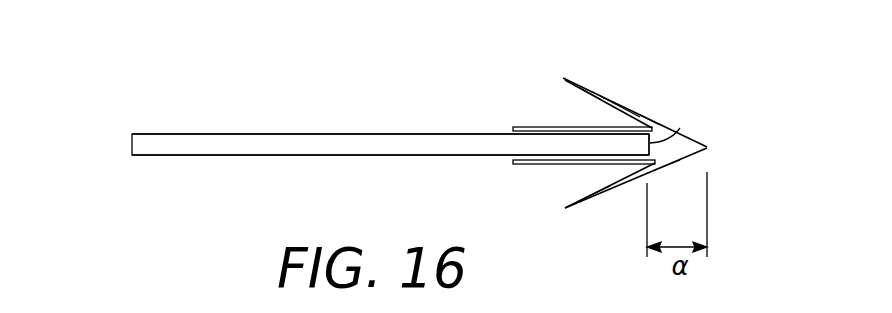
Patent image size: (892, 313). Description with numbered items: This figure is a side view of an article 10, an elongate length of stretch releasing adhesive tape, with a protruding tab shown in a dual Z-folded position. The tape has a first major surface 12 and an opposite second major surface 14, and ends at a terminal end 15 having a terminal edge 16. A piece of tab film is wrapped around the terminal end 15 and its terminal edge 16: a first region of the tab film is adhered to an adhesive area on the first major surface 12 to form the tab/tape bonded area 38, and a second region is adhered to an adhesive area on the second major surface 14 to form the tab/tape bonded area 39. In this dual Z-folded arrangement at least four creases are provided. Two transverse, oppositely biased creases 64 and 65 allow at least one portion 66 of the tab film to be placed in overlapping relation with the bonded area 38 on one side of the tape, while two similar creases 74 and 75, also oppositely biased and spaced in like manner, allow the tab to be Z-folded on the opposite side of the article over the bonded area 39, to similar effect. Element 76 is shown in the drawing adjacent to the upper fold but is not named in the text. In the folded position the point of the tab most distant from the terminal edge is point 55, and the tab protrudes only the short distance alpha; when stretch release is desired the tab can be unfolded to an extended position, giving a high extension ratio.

The article 10 is at (132, 85).
The first major surface 12 is at (230, 156).
The second major surface 14 is at (230, 133).
The terminal end 15 is at (618, 106).
The terminal edge 16 is at (679, 128).
The tab/tape bonded area 38 is at (527, 164).
The tab/tape bonded area 39 is at (530, 127).
The point 55 is at (710, 148).
The crease 64 is at (660, 166).
The crease 65 is at (565, 211).
The portion 66 is at (593, 195).
The crease 74 is at (655, 122).
The crease 75 is at (575, 86).
The upper arm surface 76 is at (597, 98).